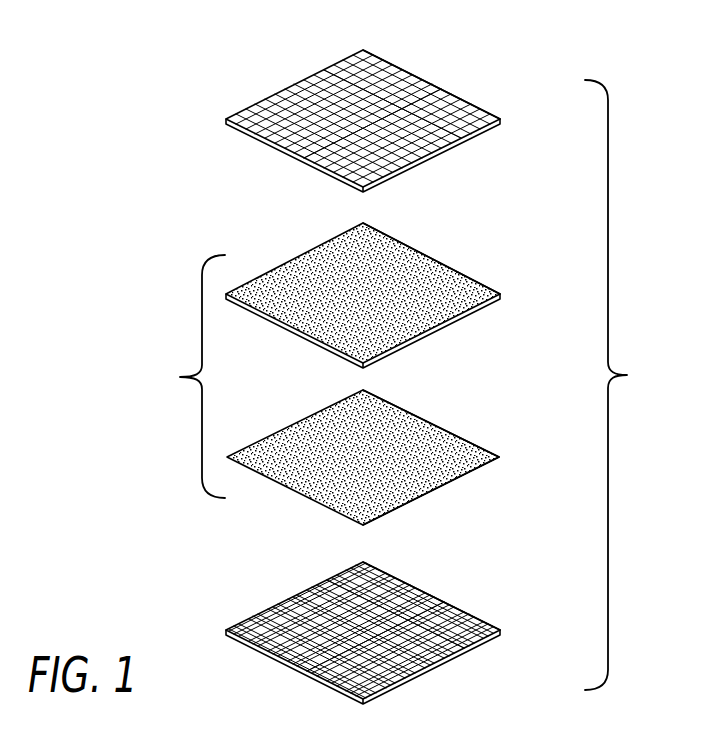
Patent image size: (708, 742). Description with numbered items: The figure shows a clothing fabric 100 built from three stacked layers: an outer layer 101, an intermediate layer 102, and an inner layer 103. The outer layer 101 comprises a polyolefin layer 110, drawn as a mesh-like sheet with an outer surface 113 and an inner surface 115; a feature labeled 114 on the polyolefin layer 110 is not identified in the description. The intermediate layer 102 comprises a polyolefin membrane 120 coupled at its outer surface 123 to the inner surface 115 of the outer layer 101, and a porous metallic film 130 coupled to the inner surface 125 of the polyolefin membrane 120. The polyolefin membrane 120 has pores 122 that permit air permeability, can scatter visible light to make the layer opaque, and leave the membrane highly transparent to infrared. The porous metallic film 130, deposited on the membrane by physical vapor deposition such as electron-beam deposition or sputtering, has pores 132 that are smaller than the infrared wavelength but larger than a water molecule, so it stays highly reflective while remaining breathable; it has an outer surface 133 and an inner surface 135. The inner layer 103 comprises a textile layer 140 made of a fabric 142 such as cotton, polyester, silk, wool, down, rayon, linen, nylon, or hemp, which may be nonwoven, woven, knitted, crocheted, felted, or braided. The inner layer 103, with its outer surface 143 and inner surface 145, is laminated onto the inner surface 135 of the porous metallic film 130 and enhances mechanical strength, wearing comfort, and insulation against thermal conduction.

The clothing fabric 100 is at (625, 385).
The outer layer 101 is at (352, 104).
The intermediate layer 102 is at (185, 376).
The inner layer 103 is at (352, 617).
The polyolefin layer 110 is at (330, 85).
The outer surface 113 is at (458, 125).
The openings of mesh 114 is at (415, 103).
The inner surface 115 is at (455, 142).
The polyolefin membrane 120 is at (383, 278).
The pores 122 is at (378, 302).
The outer surface 123 is at (455, 300).
The inner surface 125 is at (460, 317).
The porous metallic film 130 is at (383, 444).
The pores 132 is at (380, 463).
The outer surface 133 is at (455, 467).
The inner surface 135 is at (460, 483).
The textile layer 140 is at (332, 595).
The fabric 142 is at (417, 613).
The outer surface 143 is at (457, 637).
The inner surface 145 is at (460, 657).